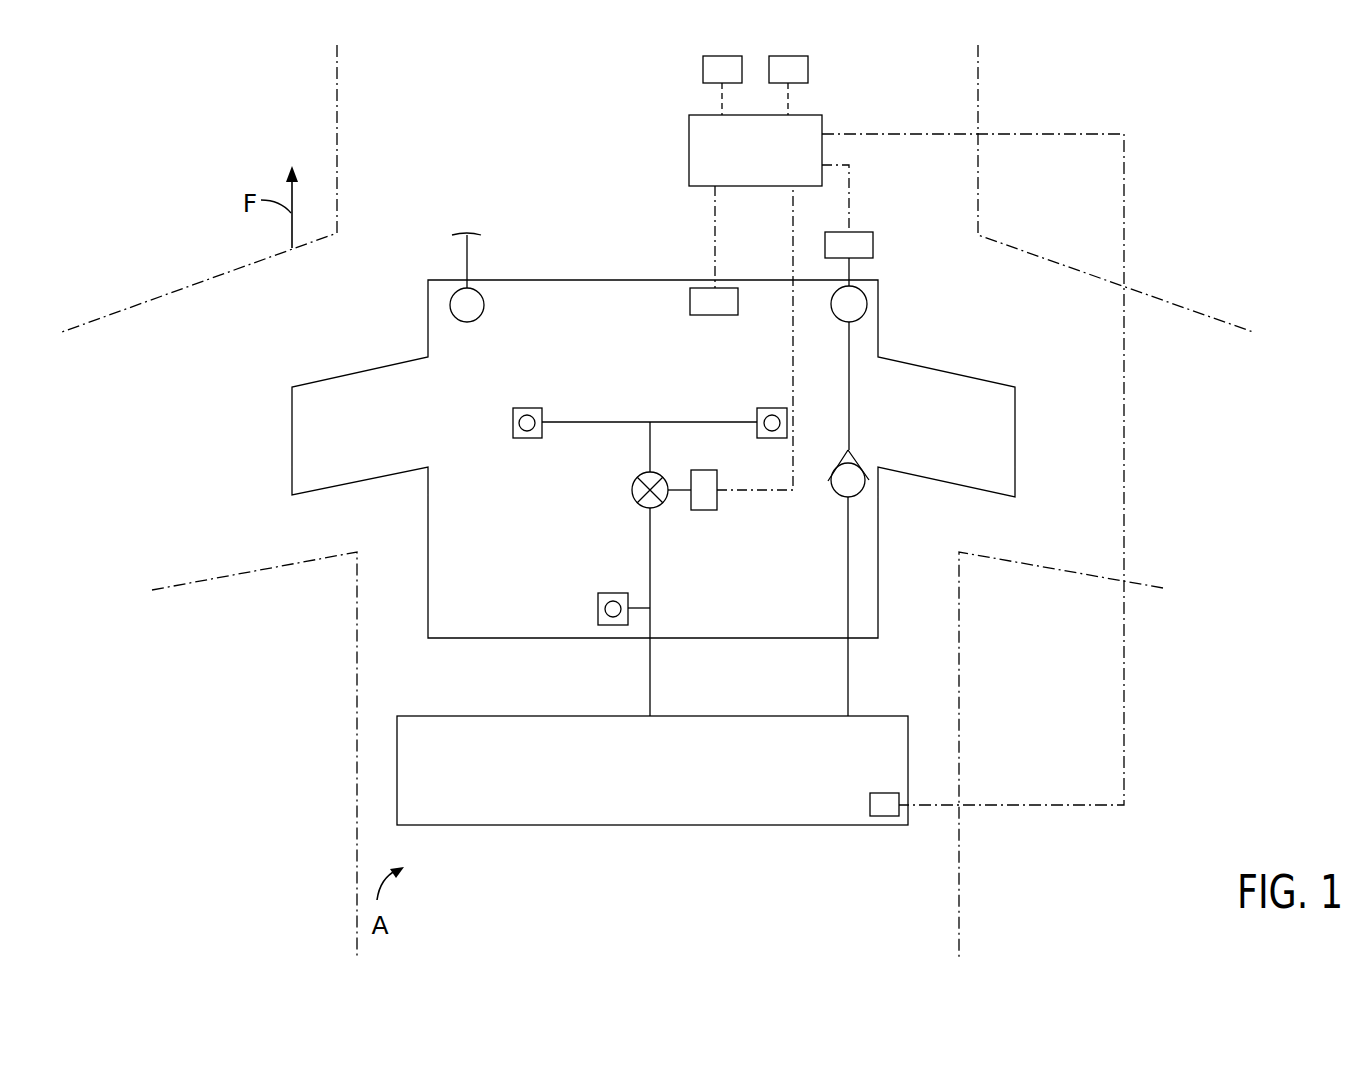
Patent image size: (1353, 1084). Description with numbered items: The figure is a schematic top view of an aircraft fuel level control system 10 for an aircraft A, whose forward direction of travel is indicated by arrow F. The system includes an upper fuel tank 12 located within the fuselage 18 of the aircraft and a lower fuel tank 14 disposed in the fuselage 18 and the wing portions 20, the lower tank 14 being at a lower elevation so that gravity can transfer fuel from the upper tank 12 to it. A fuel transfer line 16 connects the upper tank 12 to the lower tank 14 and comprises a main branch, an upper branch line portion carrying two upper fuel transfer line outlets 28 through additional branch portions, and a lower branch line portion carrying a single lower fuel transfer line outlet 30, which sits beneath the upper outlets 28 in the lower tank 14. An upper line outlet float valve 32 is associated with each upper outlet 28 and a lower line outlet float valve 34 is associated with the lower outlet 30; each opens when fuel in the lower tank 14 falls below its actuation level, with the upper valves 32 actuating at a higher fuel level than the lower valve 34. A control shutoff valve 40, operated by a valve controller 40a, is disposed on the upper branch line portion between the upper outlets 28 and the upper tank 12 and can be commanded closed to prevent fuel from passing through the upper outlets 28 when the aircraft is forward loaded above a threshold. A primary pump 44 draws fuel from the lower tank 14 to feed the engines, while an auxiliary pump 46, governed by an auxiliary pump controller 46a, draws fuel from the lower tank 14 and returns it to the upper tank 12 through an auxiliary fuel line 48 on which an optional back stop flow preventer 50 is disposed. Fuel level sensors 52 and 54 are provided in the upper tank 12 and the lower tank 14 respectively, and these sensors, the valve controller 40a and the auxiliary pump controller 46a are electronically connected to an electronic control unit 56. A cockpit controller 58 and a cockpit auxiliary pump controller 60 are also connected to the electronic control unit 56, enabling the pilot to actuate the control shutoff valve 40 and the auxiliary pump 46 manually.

The aircraft fuel level control system 10 is at (936, 218).
The upper fuel tank 12 is at (652, 770).
The lower fuel tank 14 is at (653, 459).
The fuel transfer line 16 is at (670, 680).
The fuselage 18 is at (378, 778).
The wing portions 20 is at (170, 327).
The upper fuel transfer line outlet 28 is at (542, 425).
The lower fuel transfer line outlet 30 is at (632, 594).
The upper line outlet valve 32 is at (527, 407).
The lower line outlet valve 34 is at (612, 593).
The control shutoff valve 40 is at (664, 499).
The valve controller 40a is at (717, 500).
The primary pump 44 is at (484, 302).
The auxiliary pump 46 is at (867, 304).
The auxiliary pump controller 46a is at (873, 245).
The auxiliary fuel line 48 is at (850, 388).
The back stop flow preventer 50 is at (835, 482).
The fuel level sensor 52 is at (870, 807).
The fuel level sensor 54 is at (690, 298).
The electronic control unit 56 is at (689, 152).
The cockpit controller 58 is at (703, 67).
The cockpit auxiliary pump controller 60 is at (808, 67).